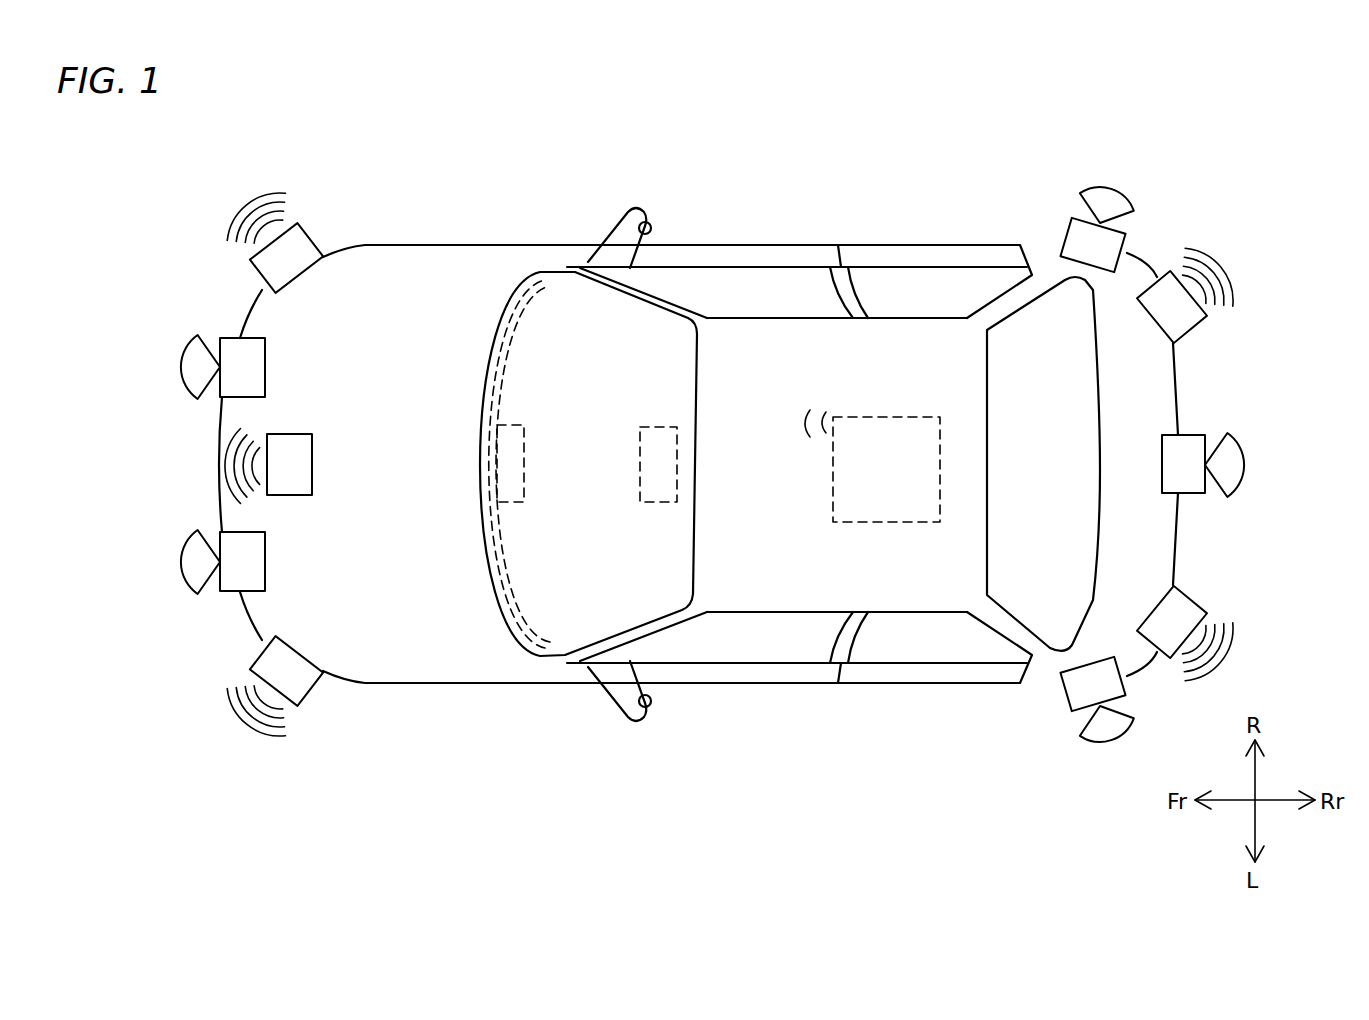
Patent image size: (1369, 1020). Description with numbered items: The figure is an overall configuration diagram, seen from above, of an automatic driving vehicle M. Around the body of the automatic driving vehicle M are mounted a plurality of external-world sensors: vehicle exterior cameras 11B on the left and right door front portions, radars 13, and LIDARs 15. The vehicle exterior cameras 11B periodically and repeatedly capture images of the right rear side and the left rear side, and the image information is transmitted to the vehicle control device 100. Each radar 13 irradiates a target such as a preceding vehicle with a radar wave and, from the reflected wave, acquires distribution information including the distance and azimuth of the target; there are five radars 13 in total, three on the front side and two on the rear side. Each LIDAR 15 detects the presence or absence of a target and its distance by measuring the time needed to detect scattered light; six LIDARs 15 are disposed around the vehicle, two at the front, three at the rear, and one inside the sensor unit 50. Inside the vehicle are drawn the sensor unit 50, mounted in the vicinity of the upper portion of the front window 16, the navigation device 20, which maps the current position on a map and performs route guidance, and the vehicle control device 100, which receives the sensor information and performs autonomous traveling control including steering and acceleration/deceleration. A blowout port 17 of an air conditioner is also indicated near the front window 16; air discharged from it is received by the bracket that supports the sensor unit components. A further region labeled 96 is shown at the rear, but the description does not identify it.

The automatic driving vehicle M is at (852, 220).
The vehicle exterior camera 11B is at (652, 228).
The radar 13 is at (263, 280).
The LIDAR 15 is at (266, 370).
The front window 16 is at (590, 465).
The blowout port 17 is at (505, 590).
The navigation device 20 is at (490, 447).
The sensor unit 50 is at (683, 438).
The rear compartment 96 is at (1063, 465).
The vehicle control device 100 is at (880, 417).